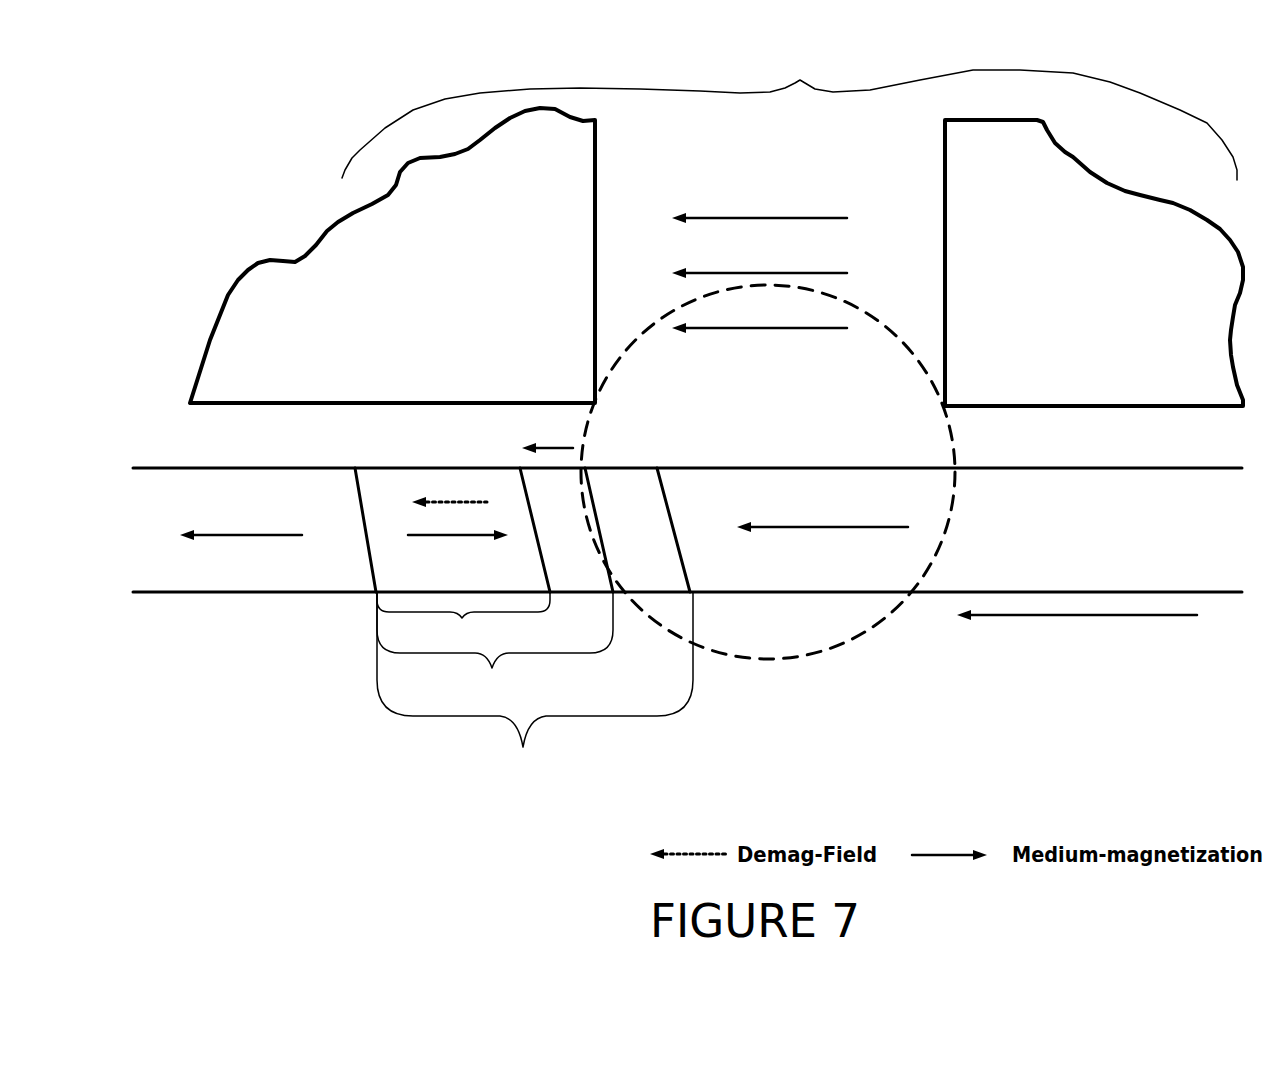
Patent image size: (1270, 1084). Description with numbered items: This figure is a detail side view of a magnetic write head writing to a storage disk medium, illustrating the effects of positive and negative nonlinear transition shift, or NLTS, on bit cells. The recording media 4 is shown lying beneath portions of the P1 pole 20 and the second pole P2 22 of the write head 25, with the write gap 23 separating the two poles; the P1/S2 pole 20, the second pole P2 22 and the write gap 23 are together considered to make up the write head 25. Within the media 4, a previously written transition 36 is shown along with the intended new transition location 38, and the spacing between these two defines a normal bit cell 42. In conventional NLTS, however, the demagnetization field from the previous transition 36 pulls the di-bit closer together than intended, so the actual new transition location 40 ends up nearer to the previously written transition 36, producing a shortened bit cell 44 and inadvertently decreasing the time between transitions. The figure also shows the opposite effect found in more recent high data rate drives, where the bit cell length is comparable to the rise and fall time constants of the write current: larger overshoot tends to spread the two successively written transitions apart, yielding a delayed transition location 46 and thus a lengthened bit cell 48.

The recording media 4 is at (1116, 541).
The P1/S2 pole 20 is at (1031, 286).
The second pole P2 22 is at (420, 306).
The write gap 23 is at (778, 185).
The write head 25 is at (789, 114).
The previously written transition 36 is at (373, 596).
The intended new transition location 38 is at (610, 600).
The actual new transition location 40 is at (547, 587).
The normal bit cell 42 is at (495, 651).
The shortened bit cell 44 is at (463, 620).
The delayed transition location 46 is at (695, 585).
The lengthened bit cell 48 is at (535, 689).